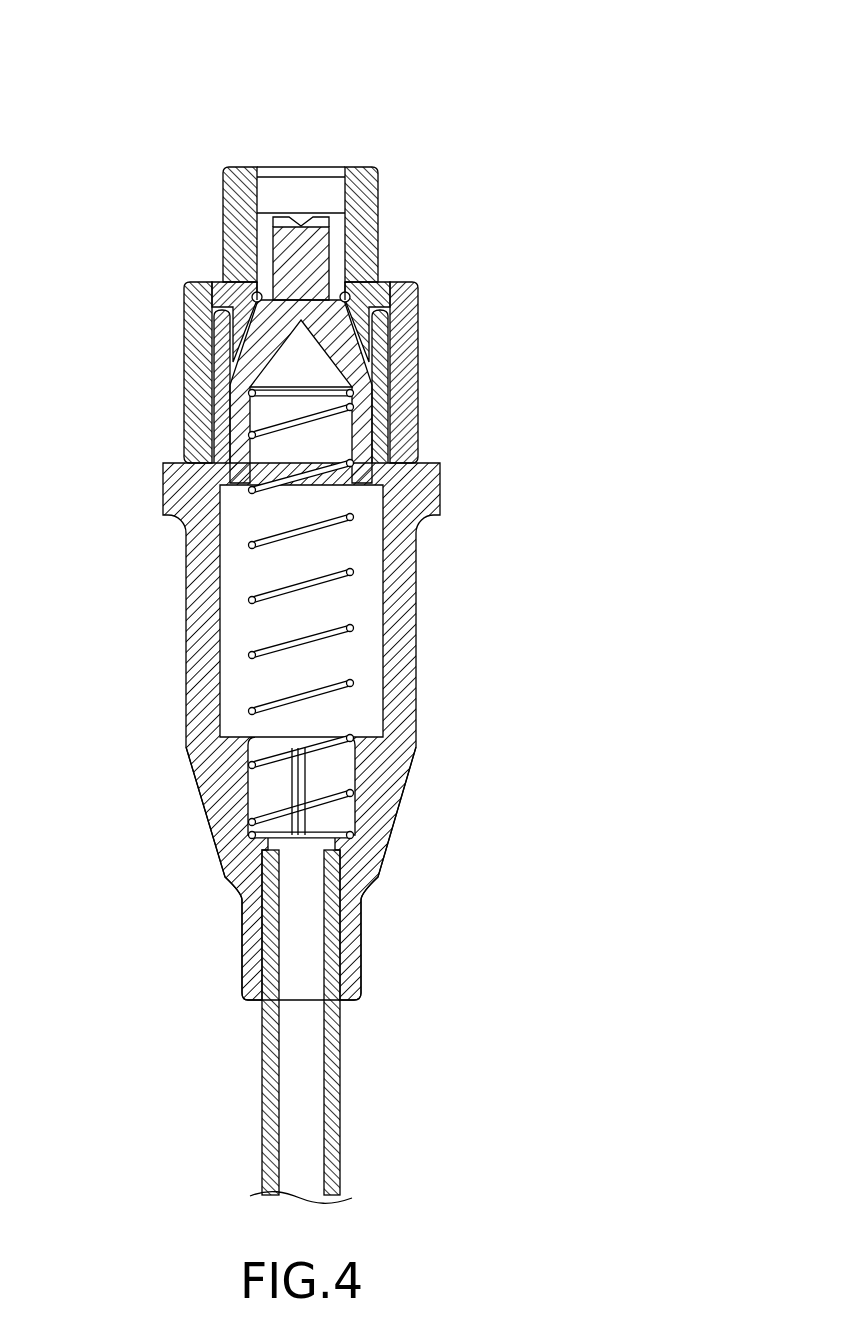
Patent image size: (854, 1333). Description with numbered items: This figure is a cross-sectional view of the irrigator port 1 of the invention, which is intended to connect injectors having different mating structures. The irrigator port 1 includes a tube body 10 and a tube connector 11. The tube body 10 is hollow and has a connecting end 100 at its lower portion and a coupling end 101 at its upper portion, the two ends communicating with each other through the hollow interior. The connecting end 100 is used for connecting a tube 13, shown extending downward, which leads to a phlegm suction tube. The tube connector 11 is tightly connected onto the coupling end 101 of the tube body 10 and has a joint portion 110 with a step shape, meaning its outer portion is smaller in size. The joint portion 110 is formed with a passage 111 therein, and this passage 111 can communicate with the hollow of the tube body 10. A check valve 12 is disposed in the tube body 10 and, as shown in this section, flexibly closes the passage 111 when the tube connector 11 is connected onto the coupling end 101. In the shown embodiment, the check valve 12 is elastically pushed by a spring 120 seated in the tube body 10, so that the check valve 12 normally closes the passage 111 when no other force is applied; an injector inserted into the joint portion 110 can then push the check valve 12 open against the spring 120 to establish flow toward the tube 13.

The irrigator port 1 is at (310, 58).
The tube body 10 is at (413, 620).
The connecting end 100 is at (352, 935).
The coupling end 101 is at (183, 367).
The tube connector 11 is at (407, 400).
The joint portion 110 is at (235, 227).
The passage 111 is at (317, 187).
The check valve 12 is at (398, 337).
The spring 120 is at (252, 600).
The tube 13 is at (262, 1085).